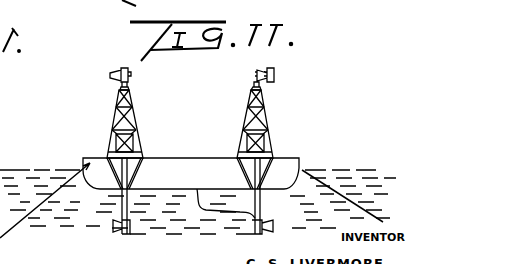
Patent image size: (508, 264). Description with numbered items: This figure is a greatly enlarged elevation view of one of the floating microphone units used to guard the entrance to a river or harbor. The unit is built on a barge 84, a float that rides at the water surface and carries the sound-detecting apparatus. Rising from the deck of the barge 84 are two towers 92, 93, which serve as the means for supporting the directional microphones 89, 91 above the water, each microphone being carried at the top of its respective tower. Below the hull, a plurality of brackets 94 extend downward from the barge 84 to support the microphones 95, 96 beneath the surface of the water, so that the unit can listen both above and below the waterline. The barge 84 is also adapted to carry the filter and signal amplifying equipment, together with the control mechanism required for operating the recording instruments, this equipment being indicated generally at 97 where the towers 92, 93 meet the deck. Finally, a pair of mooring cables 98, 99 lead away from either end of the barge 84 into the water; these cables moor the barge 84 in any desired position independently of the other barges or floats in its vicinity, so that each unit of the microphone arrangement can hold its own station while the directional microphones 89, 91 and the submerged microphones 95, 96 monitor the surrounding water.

The barge 84 is at (182, 162).
The directional microphone 89 is at (110, 76).
The directional microphone 91 is at (268, 74).
The tower 92 is at (118, 104).
The tower 93 is at (258, 112).
The bracket 94 is at (218, 195).
The microphone 95 is at (113, 227).
The microphone 96 is at (276, 222).
The filter and signal amplifying equipment 97 is at (115, 143).
The mooring cable 98 is at (44, 200).
The mooring cable 99 is at (333, 176).